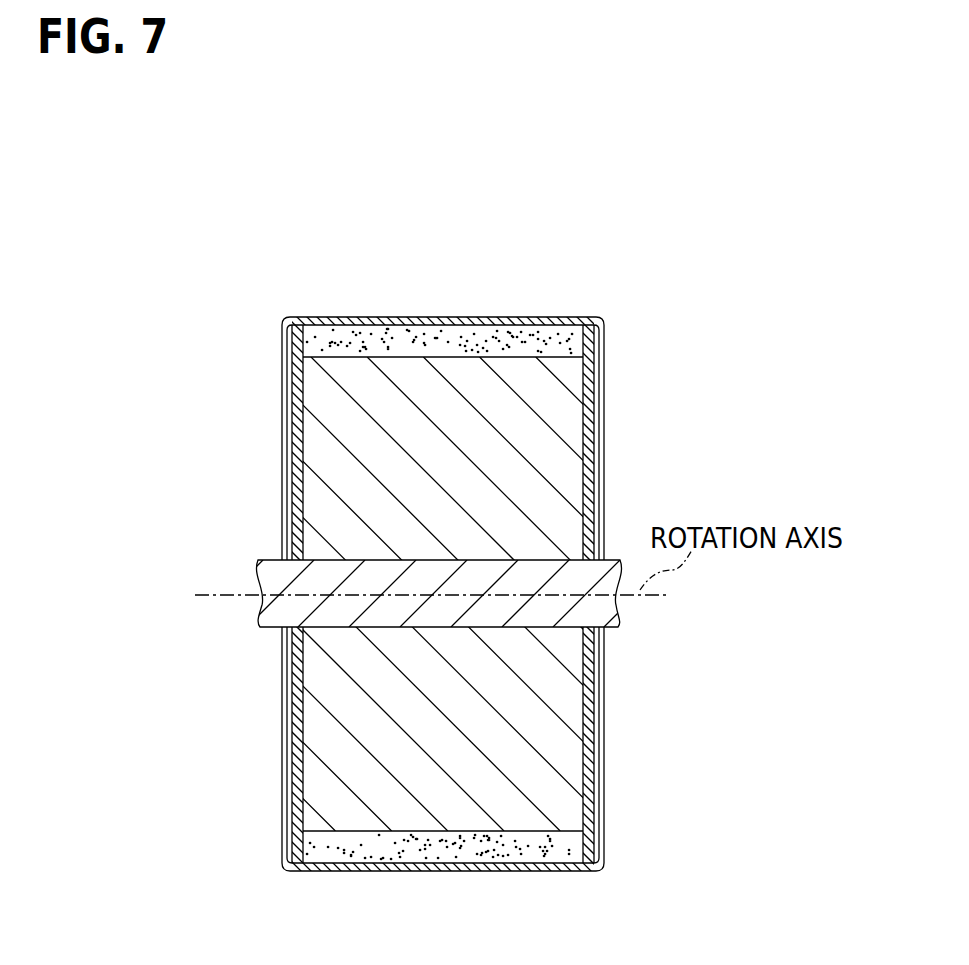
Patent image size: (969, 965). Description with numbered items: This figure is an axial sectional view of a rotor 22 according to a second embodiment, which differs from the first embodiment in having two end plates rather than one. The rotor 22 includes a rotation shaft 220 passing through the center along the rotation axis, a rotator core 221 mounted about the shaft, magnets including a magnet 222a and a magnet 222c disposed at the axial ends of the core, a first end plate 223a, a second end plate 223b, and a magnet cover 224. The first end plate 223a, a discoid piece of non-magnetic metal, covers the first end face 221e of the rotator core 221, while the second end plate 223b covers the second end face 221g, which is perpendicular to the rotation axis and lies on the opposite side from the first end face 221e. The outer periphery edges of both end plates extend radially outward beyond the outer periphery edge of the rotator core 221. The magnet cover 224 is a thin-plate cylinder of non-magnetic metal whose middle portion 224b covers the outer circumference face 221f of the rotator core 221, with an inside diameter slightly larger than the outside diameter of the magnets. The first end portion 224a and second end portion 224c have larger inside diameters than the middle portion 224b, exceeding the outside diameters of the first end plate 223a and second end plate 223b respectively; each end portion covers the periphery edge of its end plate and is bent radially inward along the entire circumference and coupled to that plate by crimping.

The rotor 22 is at (436, 245).
The rotation shaft 220 is at (598, 614).
The rotator core 221 is at (567, 705).
The first end face 221e is at (300, 377).
The outer circumference face 221f is at (347, 357).
The second end face 221g is at (590, 377).
The magnet 222a is at (492, 342).
The magnet 222c is at (488, 848).
The first end plate 223a is at (298, 748).
The second end plate 223b is at (590, 778).
The magnet cover 224 is at (418, 872).
The first end portion 224a is at (294, 318).
The middle portion 224b is at (459, 318).
The second end portion 224c is at (591, 318).